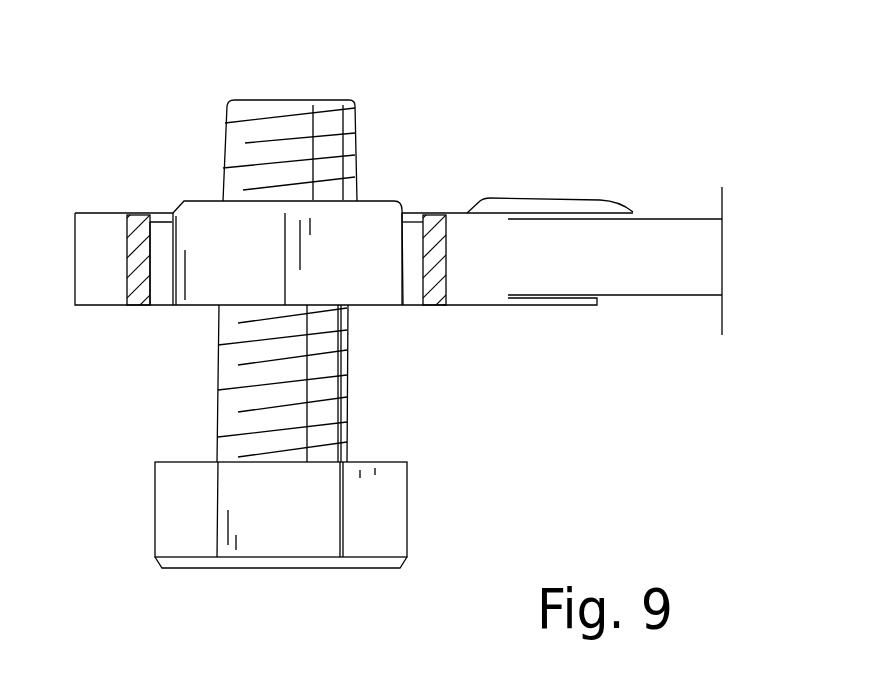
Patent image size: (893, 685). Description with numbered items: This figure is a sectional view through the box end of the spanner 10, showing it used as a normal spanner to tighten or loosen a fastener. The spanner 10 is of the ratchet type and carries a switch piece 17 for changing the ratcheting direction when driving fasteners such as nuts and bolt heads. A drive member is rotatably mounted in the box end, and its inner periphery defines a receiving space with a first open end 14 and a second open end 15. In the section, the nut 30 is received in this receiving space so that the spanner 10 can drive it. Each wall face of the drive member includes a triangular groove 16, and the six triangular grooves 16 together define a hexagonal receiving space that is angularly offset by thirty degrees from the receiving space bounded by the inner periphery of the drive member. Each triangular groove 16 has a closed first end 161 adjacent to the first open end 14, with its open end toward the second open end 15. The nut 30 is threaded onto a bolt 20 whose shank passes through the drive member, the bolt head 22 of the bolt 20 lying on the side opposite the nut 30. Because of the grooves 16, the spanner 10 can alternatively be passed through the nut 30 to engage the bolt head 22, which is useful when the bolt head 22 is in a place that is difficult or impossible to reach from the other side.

The spanner 10 is at (660, 210).
The first open end 14 is at (407, 207).
The second open end 15 is at (412, 307).
The triangular groove 16 is at (158, 292).
The closed first end 161 is at (159, 213).
The switch piece 17 is at (590, 207).
The bolt 20 is at (227, 445).
The bolt head 22 is at (392, 513).
The nut 30 is at (370, 218).